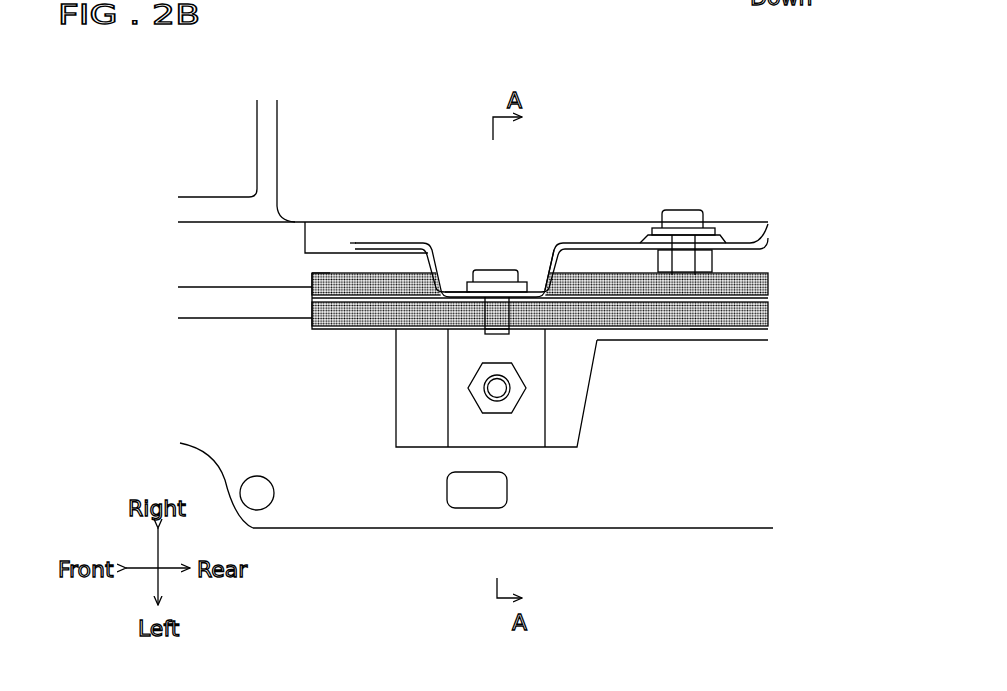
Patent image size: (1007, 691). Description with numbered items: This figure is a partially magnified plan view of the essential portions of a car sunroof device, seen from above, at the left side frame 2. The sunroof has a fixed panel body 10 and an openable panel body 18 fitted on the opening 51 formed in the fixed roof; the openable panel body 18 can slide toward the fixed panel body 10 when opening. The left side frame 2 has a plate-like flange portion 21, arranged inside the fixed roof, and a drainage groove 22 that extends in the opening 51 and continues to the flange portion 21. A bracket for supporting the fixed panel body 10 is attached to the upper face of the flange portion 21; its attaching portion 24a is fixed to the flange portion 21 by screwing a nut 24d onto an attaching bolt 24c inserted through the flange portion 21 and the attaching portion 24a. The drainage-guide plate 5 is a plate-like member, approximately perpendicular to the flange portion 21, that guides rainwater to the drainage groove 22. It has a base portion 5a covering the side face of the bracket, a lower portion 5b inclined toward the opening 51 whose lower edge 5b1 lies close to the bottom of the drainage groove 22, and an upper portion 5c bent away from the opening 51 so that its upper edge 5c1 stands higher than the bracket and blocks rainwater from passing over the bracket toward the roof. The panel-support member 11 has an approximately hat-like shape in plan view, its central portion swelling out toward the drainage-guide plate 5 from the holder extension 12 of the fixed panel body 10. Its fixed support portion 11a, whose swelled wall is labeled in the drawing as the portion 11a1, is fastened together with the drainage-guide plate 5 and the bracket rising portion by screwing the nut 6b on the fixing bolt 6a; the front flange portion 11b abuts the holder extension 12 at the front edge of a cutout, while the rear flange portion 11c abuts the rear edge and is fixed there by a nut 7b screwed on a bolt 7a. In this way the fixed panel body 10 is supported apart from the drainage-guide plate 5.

The left side frame 2 is at (427, 535).
The drainage-guide plate 5 is at (542, 313).
The base portion 5a is at (770, 302).
The lower portion 5b is at (770, 278).
The lower edge 5b1 is at (323, 273).
The upper portion 5c is at (757, 310).
The upper edge 5c1 is at (705, 323).
The fixing bolt 6a is at (495, 268).
The nut 6b is at (477, 330).
The bolt 7a is at (692, 210).
The nut 7b is at (702, 263).
The fixed panel body 10 is at (382, 150).
The panel-support member 11 is at (544, 224).
The fixed support portion 11a is at (535, 283).
The recess bottom wall 11a1 is at (458, 280).
The front flange portion 11b is at (370, 243).
The rear flange portion 11c is at (643, 243).
The holder extension 12 is at (430, 230).
The openable panel body 18 is at (232, 128).
The flange portion 21 is at (340, 527).
The drainage groove 22 is at (225, 252).
The attaching portion 24a is at (530, 433).
The attaching bolt 24c is at (505, 385).
The nut 24d is at (520, 400).
The opening 51 is at (618, 135).